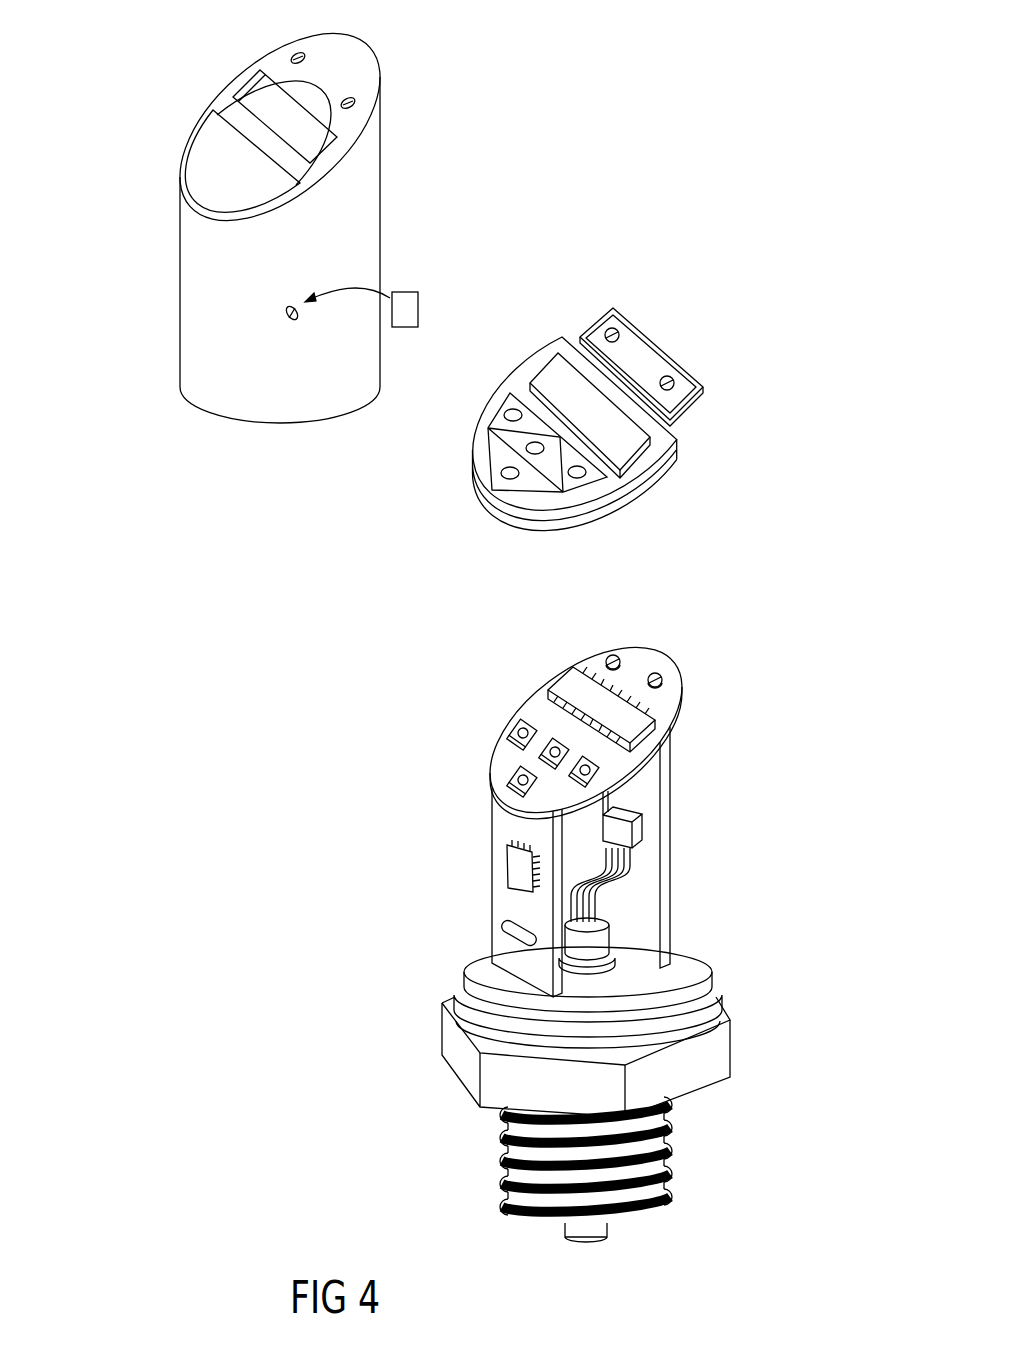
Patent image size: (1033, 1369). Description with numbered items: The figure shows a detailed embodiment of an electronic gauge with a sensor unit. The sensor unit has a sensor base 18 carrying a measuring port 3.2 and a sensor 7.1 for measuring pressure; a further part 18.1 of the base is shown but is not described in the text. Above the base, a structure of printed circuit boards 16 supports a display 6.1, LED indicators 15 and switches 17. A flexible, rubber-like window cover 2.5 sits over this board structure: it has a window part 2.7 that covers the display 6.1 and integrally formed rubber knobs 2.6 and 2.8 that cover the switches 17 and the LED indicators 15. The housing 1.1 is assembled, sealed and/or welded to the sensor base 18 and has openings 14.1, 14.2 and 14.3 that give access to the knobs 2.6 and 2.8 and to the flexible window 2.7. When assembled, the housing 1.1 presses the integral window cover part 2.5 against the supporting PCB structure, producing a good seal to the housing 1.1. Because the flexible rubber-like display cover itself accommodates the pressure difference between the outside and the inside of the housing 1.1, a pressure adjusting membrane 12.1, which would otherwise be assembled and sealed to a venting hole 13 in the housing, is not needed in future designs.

The housing 1.1 is at (365, 183).
The opening 14.1 is at (291, 55).
The opening 14.2 is at (242, 91).
The opening 14.3 is at (212, 143).
The pressure adjusting membrane 12.1 is at (419, 300).
The venting hole 13 is at (286, 315).
The flexible window cover 2.5 is at (513, 384).
The rubber knob 2.6 is at (612, 329).
The window part 2.7 is at (623, 439).
The rubber knob 2.8 is at (489, 470).
The display 6.1 is at (673, 723).
The LED indicators 15 is at (608, 650).
The circuit board 16 is at (535, 712).
The switches 17 is at (509, 737).
The sensor 7.1 is at (601, 945).
The sensor base 18 is at (461, 985).
The hexagonal nut 18.1 is at (456, 1061).
The measuring port 3.2 is at (516, 1167).